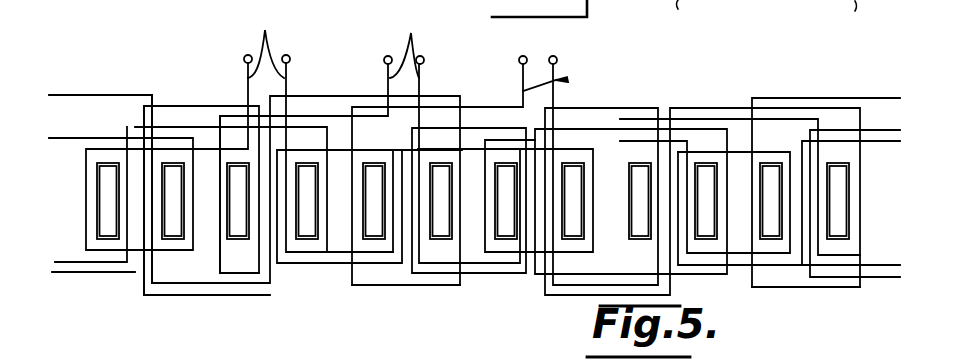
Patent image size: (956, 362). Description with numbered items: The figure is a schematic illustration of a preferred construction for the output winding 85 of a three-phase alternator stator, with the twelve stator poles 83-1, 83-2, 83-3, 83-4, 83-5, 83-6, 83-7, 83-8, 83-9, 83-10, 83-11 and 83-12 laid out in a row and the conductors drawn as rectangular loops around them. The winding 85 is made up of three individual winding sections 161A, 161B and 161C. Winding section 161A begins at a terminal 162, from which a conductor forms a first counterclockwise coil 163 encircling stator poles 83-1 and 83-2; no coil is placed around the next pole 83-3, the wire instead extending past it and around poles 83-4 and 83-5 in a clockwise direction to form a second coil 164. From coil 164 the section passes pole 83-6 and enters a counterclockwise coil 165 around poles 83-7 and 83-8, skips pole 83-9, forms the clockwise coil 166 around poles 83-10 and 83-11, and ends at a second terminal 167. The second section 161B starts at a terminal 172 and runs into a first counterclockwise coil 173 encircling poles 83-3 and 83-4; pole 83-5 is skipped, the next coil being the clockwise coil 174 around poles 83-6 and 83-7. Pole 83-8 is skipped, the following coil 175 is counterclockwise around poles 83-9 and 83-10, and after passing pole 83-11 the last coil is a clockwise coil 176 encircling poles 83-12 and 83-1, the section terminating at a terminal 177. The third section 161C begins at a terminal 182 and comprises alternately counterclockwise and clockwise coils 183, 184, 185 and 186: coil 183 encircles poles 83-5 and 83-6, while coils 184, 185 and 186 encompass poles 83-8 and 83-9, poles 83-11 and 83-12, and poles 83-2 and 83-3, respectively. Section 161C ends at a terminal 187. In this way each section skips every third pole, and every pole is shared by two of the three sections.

The stator pole 83-1 is at (307, 201).
The stator pole 83-2 is at (374, 201).
The stator pole 83-3 is at (441, 201).
The stator pole 83-4 is at (506, 201).
The stator pole 83-5 is at (573, 201).
The stator pole 83-6 is at (640, 201).
The stator pole 83-7 is at (706, 201).
The stator pole 83-8 is at (771, 201).
The stator pole 83-9 is at (838, 201).
The stator pole 83-10 is at (107, 201).
The stator pole 83-11 is at (172, 201).
The stator pole 83-12 is at (237, 201).
The output winding 85 is at (684, 68).
The winding section 161A is at (248, 44).
The winding section 161B is at (422, 40).
The winding section 161C is at (578, 84).
The terminal 162 is at (289, 56).
The first counterclockwise coil 163 is at (344, 252).
The second coil 164 is at (517, 263).
The counterclockwise coil 165 is at (745, 253).
The clockwise coil 166 is at (175, 253).
The second terminal 167 is at (245, 60).
The terminal 172 is at (423, 57).
The first counterclockwise coil 173 is at (495, 263).
The clockwise coil 174 is at (730, 128).
The coil 175 is at (55, 262).
The clockwise coil 176 is at (302, 275).
The terminal 177 is at (384, 62).
The terminal 182 is at (556, 57).
The coil 183 is at (597, 288).
The coil 184 is at (810, 290).
The coil 185 is at (233, 297).
The coil 186 is at (412, 285).
The terminal 187 is at (520, 63).